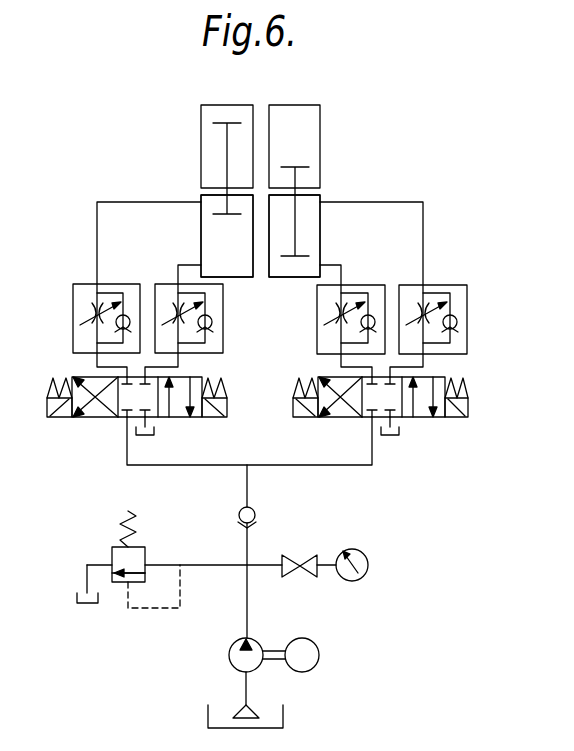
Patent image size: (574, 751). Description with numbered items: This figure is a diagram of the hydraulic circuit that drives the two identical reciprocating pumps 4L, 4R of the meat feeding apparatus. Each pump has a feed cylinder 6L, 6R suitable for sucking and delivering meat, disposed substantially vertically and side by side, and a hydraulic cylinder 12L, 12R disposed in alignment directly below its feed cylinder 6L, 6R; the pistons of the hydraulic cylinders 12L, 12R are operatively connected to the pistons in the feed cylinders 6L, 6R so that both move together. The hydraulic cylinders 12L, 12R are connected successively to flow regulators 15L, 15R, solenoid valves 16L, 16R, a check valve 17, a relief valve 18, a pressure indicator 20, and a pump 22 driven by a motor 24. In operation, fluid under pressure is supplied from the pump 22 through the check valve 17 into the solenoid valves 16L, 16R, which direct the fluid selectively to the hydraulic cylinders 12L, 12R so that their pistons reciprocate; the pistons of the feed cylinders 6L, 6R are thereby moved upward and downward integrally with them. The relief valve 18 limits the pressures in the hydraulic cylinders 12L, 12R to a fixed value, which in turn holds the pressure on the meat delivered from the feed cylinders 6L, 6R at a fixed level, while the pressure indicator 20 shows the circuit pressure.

The reciprocating pump 4L is at (172, 108).
The reciprocating pump 4R is at (346, 112).
The feed cylinder 6L is at (201, 148).
The feed cylinder 6R is at (320, 146).
The hydraulic cylinder 12L is at (203, 212).
The hydraulic cylinder 12R is at (320, 214).
The flow regulator 15L is at (85, 290).
The flow regulator 15R is at (365, 290).
The solenoid valve 16L is at (97, 417).
The solenoid valve 16R is at (405, 417).
The check valve 17 is at (256, 508).
The relief valve 18 is at (120, 558).
The pressure indicator 20 is at (369, 564).
The pump 22 is at (232, 652).
The motor 24 is at (319, 655).